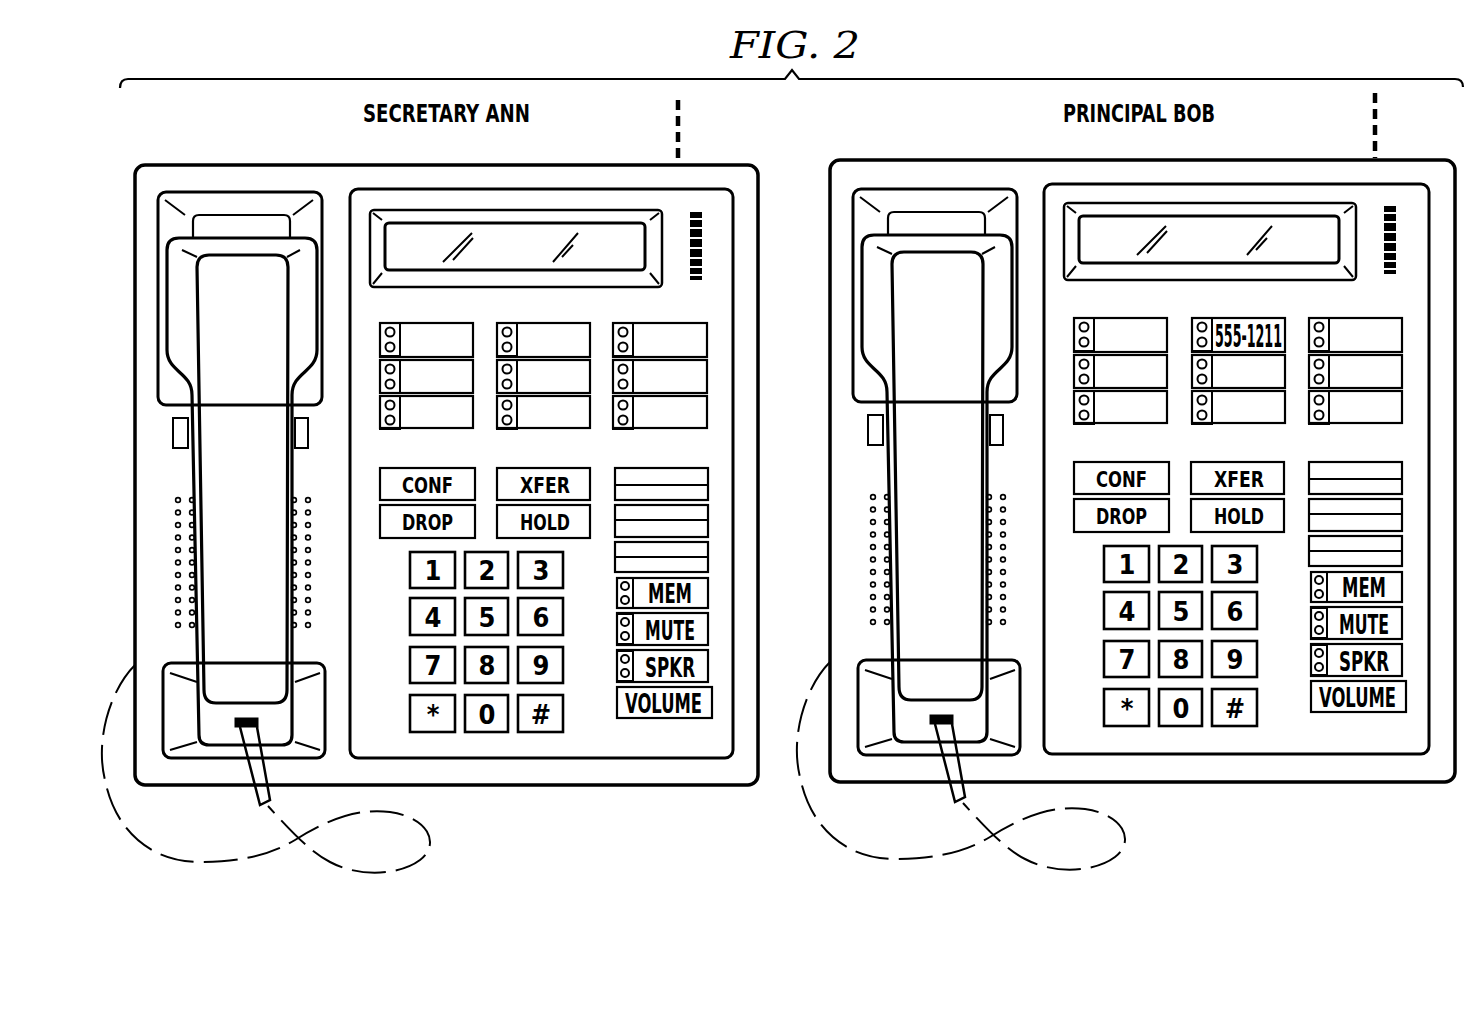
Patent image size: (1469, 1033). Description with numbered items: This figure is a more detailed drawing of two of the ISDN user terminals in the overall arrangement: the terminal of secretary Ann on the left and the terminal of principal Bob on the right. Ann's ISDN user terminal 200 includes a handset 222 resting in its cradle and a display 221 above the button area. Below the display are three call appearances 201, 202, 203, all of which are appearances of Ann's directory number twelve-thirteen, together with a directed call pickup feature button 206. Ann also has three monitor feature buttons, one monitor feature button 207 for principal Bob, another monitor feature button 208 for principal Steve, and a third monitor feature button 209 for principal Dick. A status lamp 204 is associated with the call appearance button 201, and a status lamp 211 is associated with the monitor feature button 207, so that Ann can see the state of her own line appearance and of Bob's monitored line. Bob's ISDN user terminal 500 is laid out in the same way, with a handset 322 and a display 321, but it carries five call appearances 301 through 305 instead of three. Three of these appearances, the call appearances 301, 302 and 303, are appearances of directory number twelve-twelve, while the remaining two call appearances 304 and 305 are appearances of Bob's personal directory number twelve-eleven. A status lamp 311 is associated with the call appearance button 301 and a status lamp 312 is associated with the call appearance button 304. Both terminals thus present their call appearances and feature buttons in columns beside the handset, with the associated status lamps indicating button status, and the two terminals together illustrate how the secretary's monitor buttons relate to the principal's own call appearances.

The ISDN user terminal 200 is at (455, 167).
The display 221 is at (513, 227).
The handset 222 is at (247, 243).
The call appearance 201 is at (458, 324).
The status lamp 204 is at (398, 345).
The call appearance 202 is at (473, 377).
The call appearance 203 is at (430, 429).
The directed call pickup feature button 206 is at (541, 429).
The monitor feature button 207 is at (655, 324).
The status lamp 211 is at (618, 345).
The monitor feature button 208 is at (707, 372).
The monitor feature button 209 is at (672, 429).
The ISDN user terminal 500 is at (1150, 162).
The display 321 is at (1210, 220).
The handset 322 is at (940, 238).
The call appearance 301 is at (1145, 319).
The status lamp 311 is at (1092, 340).
The call appearance 302 is at (1167, 372).
The call appearance 303 is at (1122, 424).
The status lamp 312 is at (1208, 340).
The call appearance 304 is at (1273, 319).
The call appearance 305 is at (1283, 372).